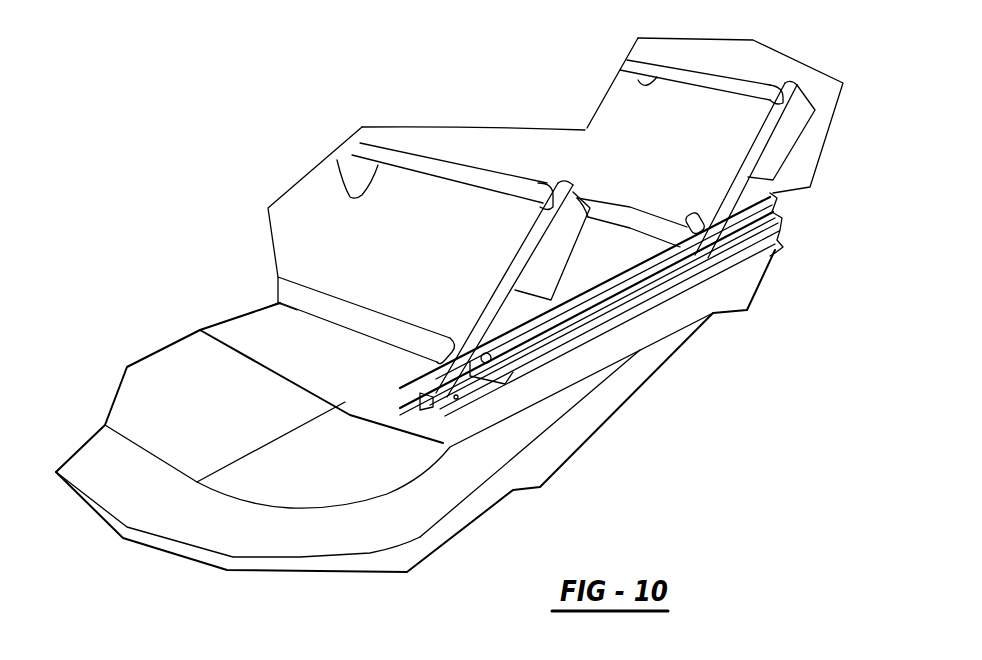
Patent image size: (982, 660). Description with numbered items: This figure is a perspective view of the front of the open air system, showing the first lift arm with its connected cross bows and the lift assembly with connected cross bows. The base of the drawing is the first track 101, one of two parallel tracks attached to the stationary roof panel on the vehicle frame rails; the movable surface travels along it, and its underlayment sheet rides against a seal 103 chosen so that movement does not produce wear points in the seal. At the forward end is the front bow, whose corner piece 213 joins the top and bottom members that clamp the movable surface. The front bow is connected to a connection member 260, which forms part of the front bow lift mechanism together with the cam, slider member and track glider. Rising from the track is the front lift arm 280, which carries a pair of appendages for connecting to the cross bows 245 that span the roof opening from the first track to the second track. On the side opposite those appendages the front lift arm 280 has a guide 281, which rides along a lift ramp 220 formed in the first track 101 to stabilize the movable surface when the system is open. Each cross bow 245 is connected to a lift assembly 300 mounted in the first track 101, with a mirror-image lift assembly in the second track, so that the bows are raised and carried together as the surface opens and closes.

The first track 101 is at (600, 333).
The seal 103 is at (233, 532).
The corner piece 213 is at (353, 462).
The lift ramp 220 is at (715, 313).
The cross bow 245 is at (320, 182).
The connection member 260 is at (432, 400).
The front lift arm 280 is at (500, 320).
The guide 281 is at (490, 360).
The lift assembly 300 is at (775, 258).